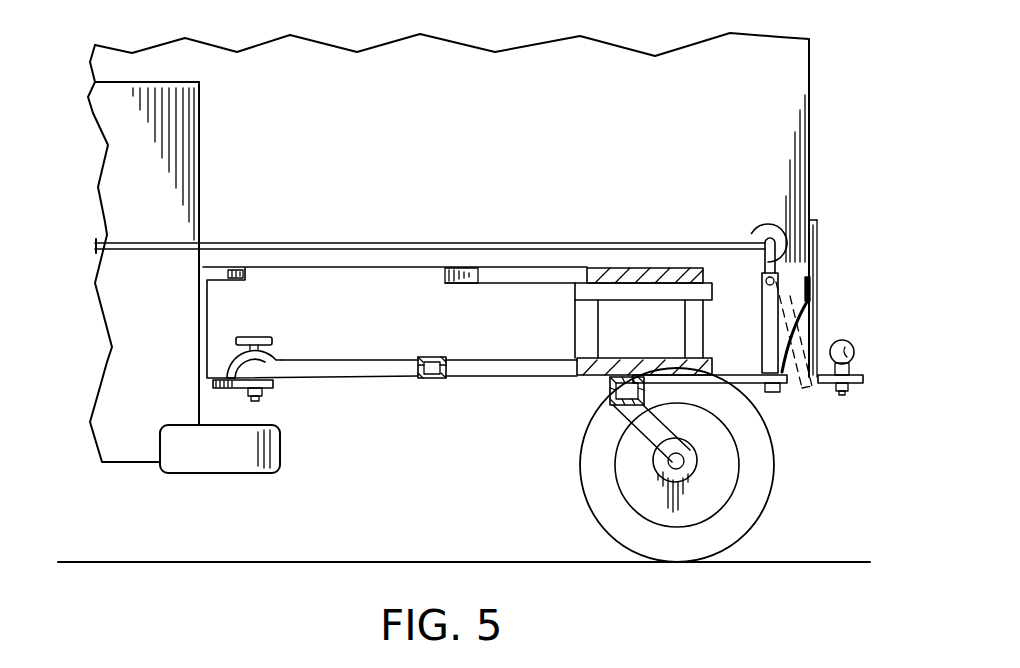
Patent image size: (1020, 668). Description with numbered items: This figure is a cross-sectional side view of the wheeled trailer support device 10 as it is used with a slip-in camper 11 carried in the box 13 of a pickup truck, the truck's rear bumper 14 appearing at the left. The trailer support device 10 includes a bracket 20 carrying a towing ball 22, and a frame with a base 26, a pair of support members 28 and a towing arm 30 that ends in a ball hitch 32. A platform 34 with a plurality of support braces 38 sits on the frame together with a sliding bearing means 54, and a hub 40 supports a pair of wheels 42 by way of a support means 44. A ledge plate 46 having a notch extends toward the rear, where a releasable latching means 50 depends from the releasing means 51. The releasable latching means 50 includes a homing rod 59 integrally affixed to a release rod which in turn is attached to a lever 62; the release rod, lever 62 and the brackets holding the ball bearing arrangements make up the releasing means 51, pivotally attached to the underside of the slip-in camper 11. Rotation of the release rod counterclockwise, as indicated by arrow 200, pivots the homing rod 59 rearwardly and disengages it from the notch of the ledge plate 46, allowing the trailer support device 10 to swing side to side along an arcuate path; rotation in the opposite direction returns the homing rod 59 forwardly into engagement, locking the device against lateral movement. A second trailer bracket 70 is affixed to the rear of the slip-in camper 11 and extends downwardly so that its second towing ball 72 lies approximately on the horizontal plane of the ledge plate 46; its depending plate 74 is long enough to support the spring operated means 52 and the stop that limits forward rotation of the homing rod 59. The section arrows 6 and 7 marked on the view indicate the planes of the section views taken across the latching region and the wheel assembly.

The trailer support device 10 is at (403, 470).
The slip-in camper 11 is at (804, 62).
The box 13 is at (143, 320).
The rear bumper 14 is at (197, 458).
The bracket 20 is at (206, 272).
The towing ball 22 is at (227, 378).
The base 26 is at (605, 378).
The support members 28 is at (510, 370).
The towing arm 30 is at (378, 368).
The ball hitch 32 is at (258, 358).
The platform 34 is at (583, 293).
The support braces 38 is at (585, 323).
The hub 40 is at (610, 393).
The wheels 42 is at (588, 472).
The support means 44 is at (647, 433).
The ledge plate 46 is at (717, 382).
The releasable latching means 50 is at (756, 318).
The releasing means 51 is at (758, 256).
The spring operated means 52 is at (808, 303).
The sliding bearing means 54 is at (625, 278).
The homing rod 59 is at (763, 332).
The lever 62 is at (779, 253).
The second trailer bracket 70 is at (865, 378).
The second towing ball 72 is at (853, 352).
The depending plate 74 is at (818, 321).
The arrow 200 is at (752, 228).
The section line 6 is at (555, 325).
The section line 7 is at (775, 185).